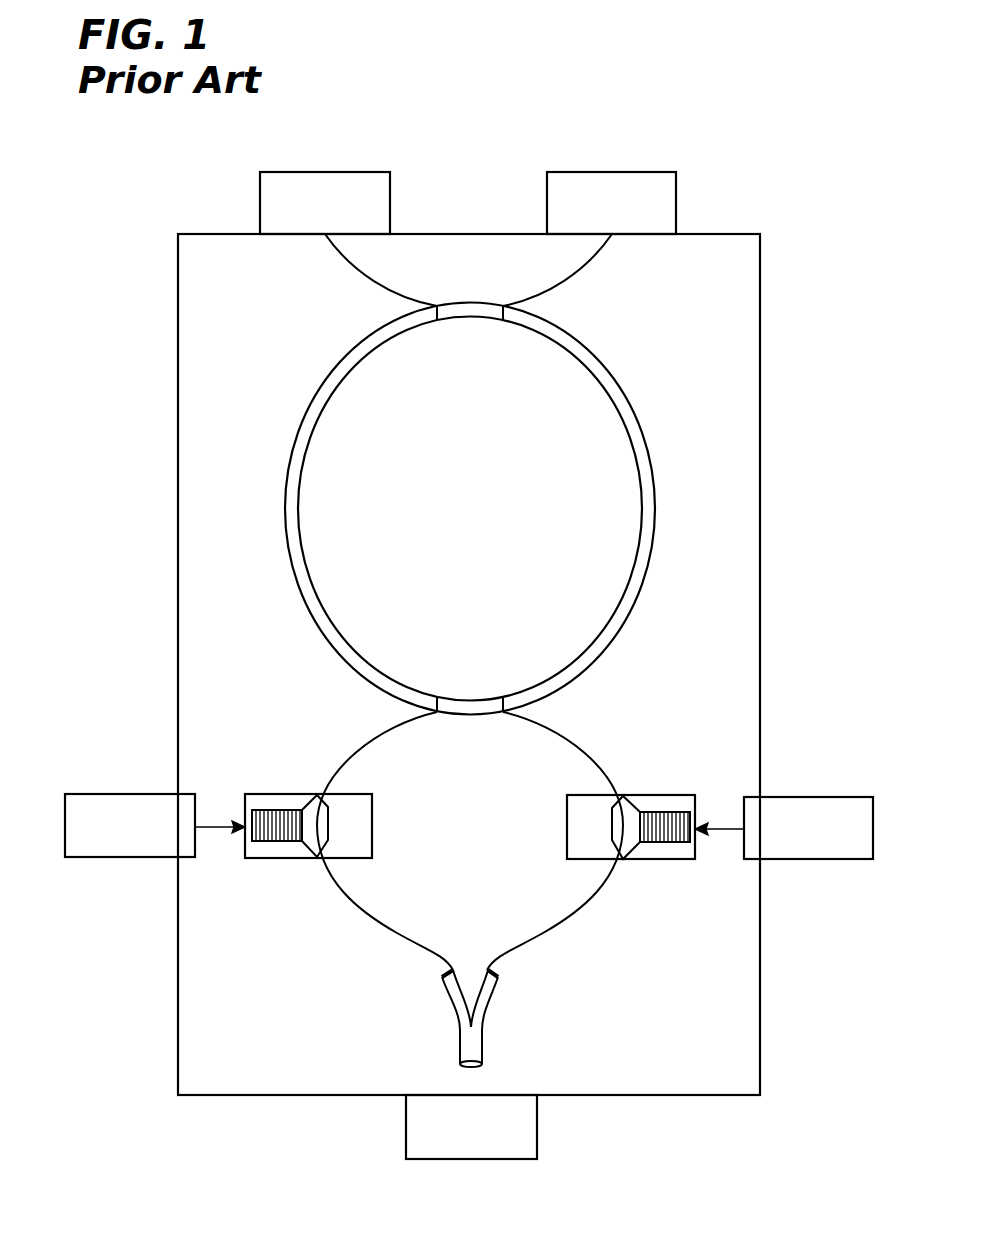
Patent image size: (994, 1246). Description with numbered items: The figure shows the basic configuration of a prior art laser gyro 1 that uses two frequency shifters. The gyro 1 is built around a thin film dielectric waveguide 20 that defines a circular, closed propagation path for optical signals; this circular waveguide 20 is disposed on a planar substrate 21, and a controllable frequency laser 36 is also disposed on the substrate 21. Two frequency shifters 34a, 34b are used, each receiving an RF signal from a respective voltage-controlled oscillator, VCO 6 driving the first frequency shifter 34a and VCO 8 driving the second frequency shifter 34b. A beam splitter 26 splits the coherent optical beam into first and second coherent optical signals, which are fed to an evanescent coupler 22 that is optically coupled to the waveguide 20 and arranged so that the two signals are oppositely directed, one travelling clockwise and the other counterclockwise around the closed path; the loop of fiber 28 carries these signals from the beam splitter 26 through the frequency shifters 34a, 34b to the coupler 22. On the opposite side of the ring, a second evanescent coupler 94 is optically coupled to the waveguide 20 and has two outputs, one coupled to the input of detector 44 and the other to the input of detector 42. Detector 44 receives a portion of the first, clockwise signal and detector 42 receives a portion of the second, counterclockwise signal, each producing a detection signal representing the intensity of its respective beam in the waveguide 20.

The laser gyro 1 is at (202, 1166).
The voltage-controlled oscillator 6 is at (138, 857).
The voltage-controlled oscillator 8 is at (808, 859).
The thin film dielectric waveguide 20 is at (330, 395).
The planar substrate 21 is at (760, 286).
The evanescent coupler 22 is at (465, 700).
The beam splitter 26 is at (482, 1032).
The input fiber loop 28 is at (357, 907).
The frequency shifter 34a is at (272, 858).
The frequency shifter 34b is at (650, 860).
The controllable frequency laser 36 is at (468, 1159).
The detector 42 is at (390, 192).
The detector 44 is at (676, 192).
The evanescent coupler 94 is at (467, 312).